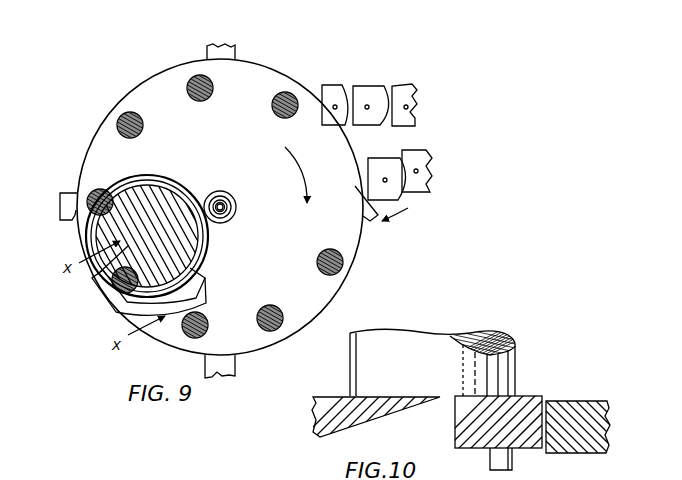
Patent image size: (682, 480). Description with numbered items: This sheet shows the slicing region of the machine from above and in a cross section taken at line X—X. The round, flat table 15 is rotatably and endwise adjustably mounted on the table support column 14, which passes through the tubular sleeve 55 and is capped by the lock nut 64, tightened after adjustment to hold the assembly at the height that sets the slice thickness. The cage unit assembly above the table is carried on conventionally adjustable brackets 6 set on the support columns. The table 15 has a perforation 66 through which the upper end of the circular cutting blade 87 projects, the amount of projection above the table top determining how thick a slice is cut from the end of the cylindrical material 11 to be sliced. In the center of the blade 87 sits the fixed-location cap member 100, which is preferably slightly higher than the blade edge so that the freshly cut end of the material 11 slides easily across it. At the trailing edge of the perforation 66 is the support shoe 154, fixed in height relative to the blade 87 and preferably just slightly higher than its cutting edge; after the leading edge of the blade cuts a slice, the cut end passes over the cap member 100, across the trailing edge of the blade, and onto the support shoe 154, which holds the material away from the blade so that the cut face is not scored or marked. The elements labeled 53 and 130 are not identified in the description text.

In FIG. 9, the adjustable brackets 6 is at (242, 52).
In FIG. 9, the material to be sliced 11 is at (282, 305).
In FIG. 10, the material to be sliced 11 is at (516, 345).
In FIG. 9, the table support column 14 is at (223, 204).
In FIG. 9, the table 15 is at (322, 297).
In FIG. 10, the table 15 is at (597, 401).
In FIG. 9, the shaft 53 is at (236, 207).
In FIG. 9, the tubular sleeve 55 is at (242, 219).
In FIG. 9, the lock nut 64 is at (232, 207).
In FIG. 9, the perforation 66 is at (105, 270).
In FIG. 10, the perforation 66 is at (537, 450).
In FIG. 9, the circular cutting blade 87 is at (206, 236).
In FIG. 10, the circular cutting blade 87 is at (380, 418).
In FIG. 9, the cap member 100 is at (150, 227).
In FIG. 9, the pawl elements 130 is at (390, 72).
In FIG. 9, the support shoe 154 is at (122, 303).
In FIG. 10, the support shoe 154 is at (545, 396).